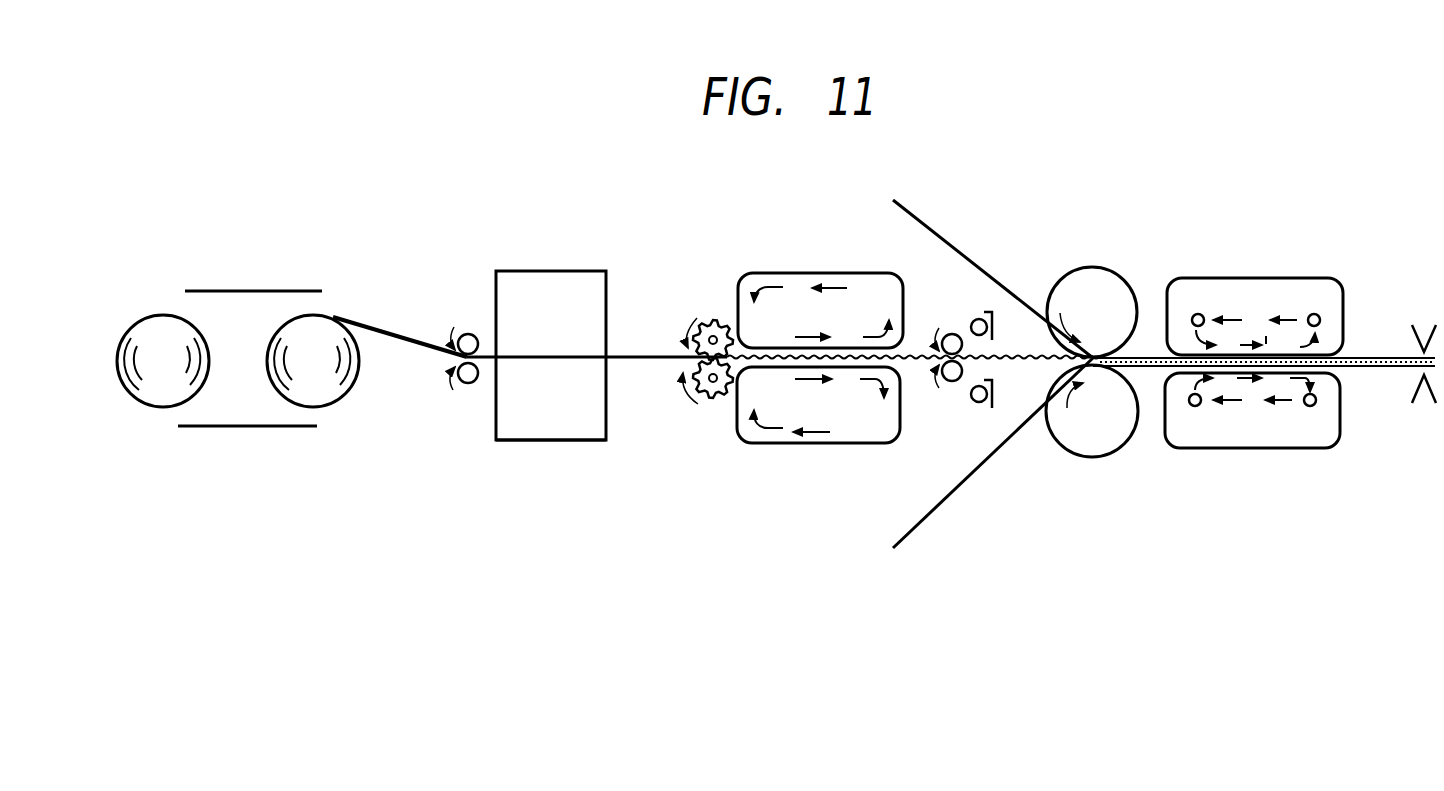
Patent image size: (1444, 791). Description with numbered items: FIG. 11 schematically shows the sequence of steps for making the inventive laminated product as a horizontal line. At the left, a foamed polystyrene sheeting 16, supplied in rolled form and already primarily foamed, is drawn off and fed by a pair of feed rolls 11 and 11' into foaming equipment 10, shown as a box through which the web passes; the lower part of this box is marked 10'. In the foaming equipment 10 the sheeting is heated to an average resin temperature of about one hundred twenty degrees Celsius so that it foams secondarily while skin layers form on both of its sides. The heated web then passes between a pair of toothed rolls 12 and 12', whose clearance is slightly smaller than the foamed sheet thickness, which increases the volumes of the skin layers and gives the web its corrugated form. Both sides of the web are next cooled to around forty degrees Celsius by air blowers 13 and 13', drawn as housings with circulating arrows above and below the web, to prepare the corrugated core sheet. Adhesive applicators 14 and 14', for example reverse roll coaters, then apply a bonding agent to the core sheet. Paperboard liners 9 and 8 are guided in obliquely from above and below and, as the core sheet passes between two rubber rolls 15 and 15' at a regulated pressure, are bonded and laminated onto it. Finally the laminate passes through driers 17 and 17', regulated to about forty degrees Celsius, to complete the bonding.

The paperboard liner 8 is at (978, 470).
The paperboard liner 9 is at (925, 223).
The foaming equipment 10 is at (552, 329).
The lower part of treatment chamber 10' is at (573, 463).
The feed roll 11 is at (462, 311).
The feed roll 11' is at (462, 400).
The toothed roll 12 is at (709, 308).
The toothed roll 12' is at (708, 412).
The air blower 13 is at (820, 283).
The air blower 13' is at (818, 433).
The adhesive applicator 14 is at (961, 314).
The adhesive applicator 14' is at (961, 407).
The rubber roll 15 is at (1092, 283).
The rubber roll 15' is at (1092, 440).
The foamed polystyrene sheeting 16 is at (192, 338).
The drier 17 is at (1255, 286).
The drier 17' is at (1252, 444).